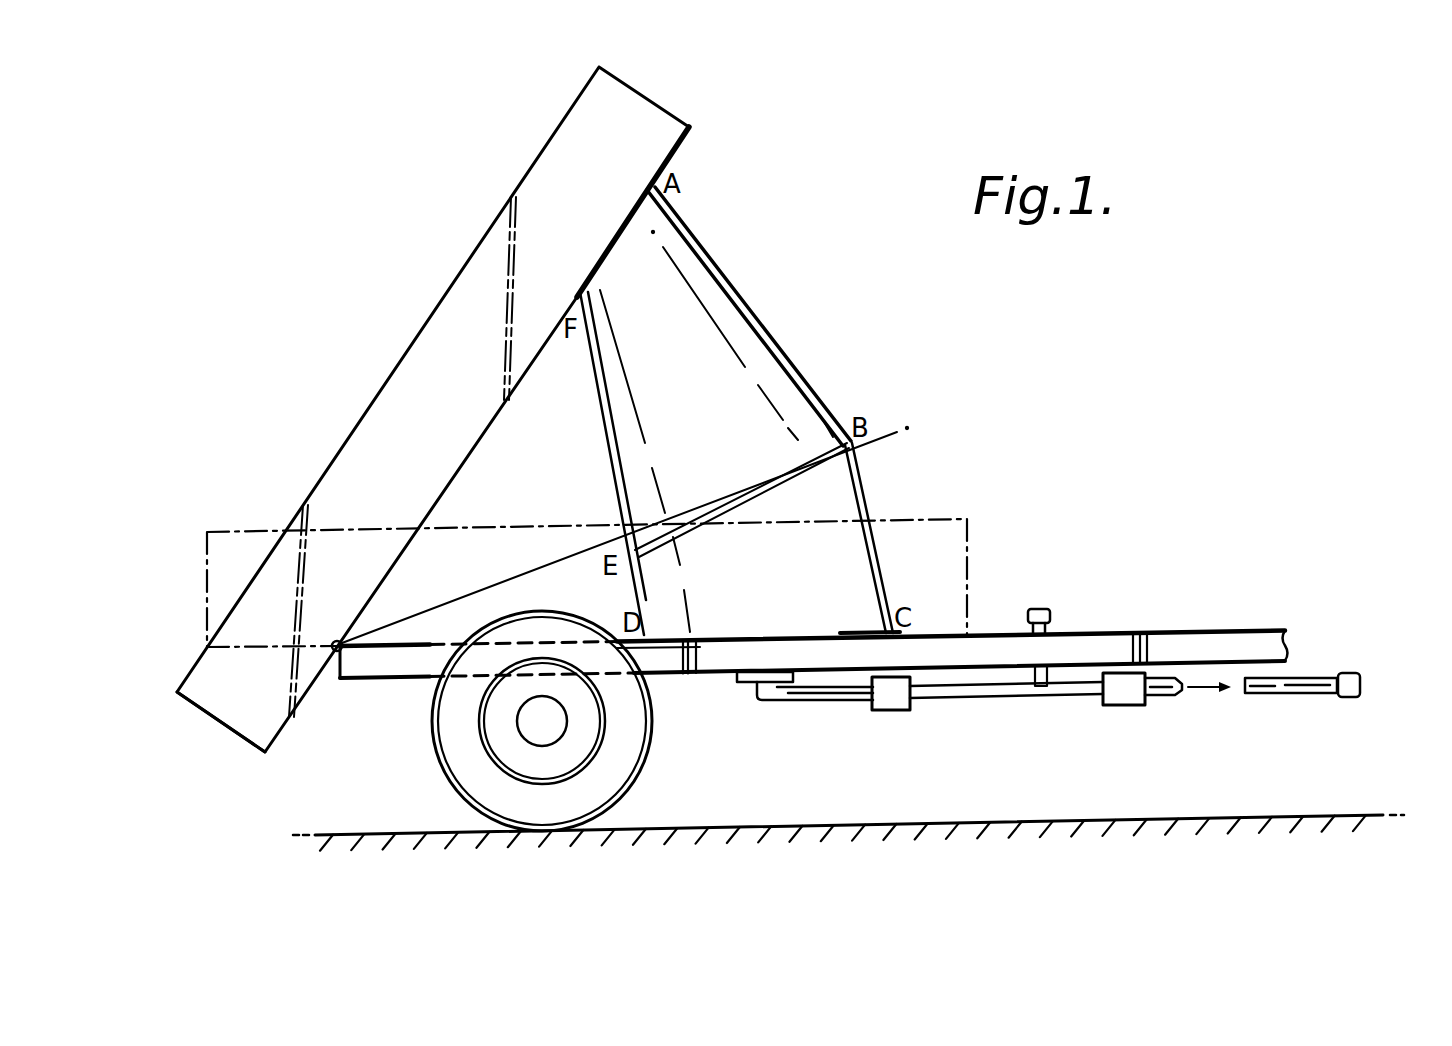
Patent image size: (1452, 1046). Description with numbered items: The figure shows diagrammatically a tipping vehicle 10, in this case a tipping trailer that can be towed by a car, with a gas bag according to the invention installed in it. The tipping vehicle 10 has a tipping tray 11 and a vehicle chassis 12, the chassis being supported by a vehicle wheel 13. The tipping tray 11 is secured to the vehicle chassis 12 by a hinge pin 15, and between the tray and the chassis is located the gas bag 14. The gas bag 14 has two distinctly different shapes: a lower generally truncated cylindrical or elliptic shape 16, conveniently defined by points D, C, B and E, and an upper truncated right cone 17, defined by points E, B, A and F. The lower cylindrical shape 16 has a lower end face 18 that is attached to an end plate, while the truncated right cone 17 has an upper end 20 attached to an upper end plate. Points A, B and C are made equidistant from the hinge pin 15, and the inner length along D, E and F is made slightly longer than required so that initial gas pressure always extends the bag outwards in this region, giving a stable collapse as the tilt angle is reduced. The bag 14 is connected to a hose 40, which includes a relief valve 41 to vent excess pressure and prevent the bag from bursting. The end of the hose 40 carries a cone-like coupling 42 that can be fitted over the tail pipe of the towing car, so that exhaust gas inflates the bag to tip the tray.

The tipping vehicle 10 is at (410, 718).
The tipping tray 11 is at (457, 250).
The vehicle chassis 12 is at (1226, 648).
The vehicle wheel 13 is at (628, 727).
The gas bag 14 is at (727, 276).
The hinge pin 15 is at (343, 640).
The lower generally truncated cylindrical or elliptic shape 16 is at (874, 491).
The upper truncated right cone 17 is at (633, 262).
The lower end face 18 is at (845, 626).
The upper end 20 is at (600, 250).
The hose 40 is at (822, 693).
The relief valve 41 is at (1034, 606).
The cone-like coupling 42 is at (1362, 686).